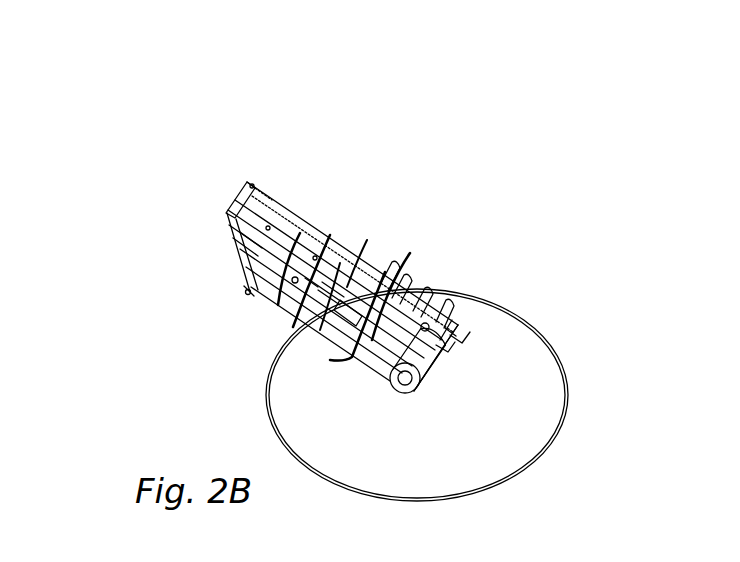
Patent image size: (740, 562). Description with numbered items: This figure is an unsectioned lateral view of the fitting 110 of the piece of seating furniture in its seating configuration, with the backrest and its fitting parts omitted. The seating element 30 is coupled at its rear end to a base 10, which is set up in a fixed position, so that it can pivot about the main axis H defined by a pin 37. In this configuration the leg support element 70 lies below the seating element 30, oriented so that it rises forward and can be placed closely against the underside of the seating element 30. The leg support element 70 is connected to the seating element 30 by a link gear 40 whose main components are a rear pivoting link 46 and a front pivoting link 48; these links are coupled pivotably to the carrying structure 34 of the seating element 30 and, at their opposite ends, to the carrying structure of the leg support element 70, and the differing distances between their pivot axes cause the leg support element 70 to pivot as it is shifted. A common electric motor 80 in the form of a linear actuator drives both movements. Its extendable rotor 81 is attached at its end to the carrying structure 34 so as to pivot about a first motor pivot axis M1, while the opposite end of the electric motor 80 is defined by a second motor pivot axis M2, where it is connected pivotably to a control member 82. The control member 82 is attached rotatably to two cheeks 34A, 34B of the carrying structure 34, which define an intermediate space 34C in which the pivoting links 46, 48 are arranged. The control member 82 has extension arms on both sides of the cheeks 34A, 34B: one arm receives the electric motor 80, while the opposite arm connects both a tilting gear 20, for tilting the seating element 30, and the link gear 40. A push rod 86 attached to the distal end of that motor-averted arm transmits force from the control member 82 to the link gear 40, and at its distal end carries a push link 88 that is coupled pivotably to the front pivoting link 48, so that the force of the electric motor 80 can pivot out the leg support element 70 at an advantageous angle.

The base 10 is at (447, 394).
The fitting 110 is at (481, 95).
The seating element 30 is at (343, 233).
The link gear 40 is at (253, 258).
The leg support element 70 is at (199, 256).
The front pivoting link 48 is at (246, 294).
The push link 88 is at (280, 240).
The carrying structure 34 is at (278, 305).
The push rod 86 is at (356, 290).
The cheek 34A is at (370, 335).
The cheek 34B is at (386, 295).
The pin 37 is at (407, 308).
The intermediate space 34C is at (447, 340).
The tilting gear 20 is at (455, 322).
The control member 82 is at (443, 348).
The electric motor 80 is at (394, 337).
The extendable rotor 81 is at (344, 300).
The rear pivoting link 46 is at (337, 292).
The main axis H is at (345, 344).
The first motor pivot axis M1 is at (308, 282).
The second motor pivot axis M2 is at (450, 330).